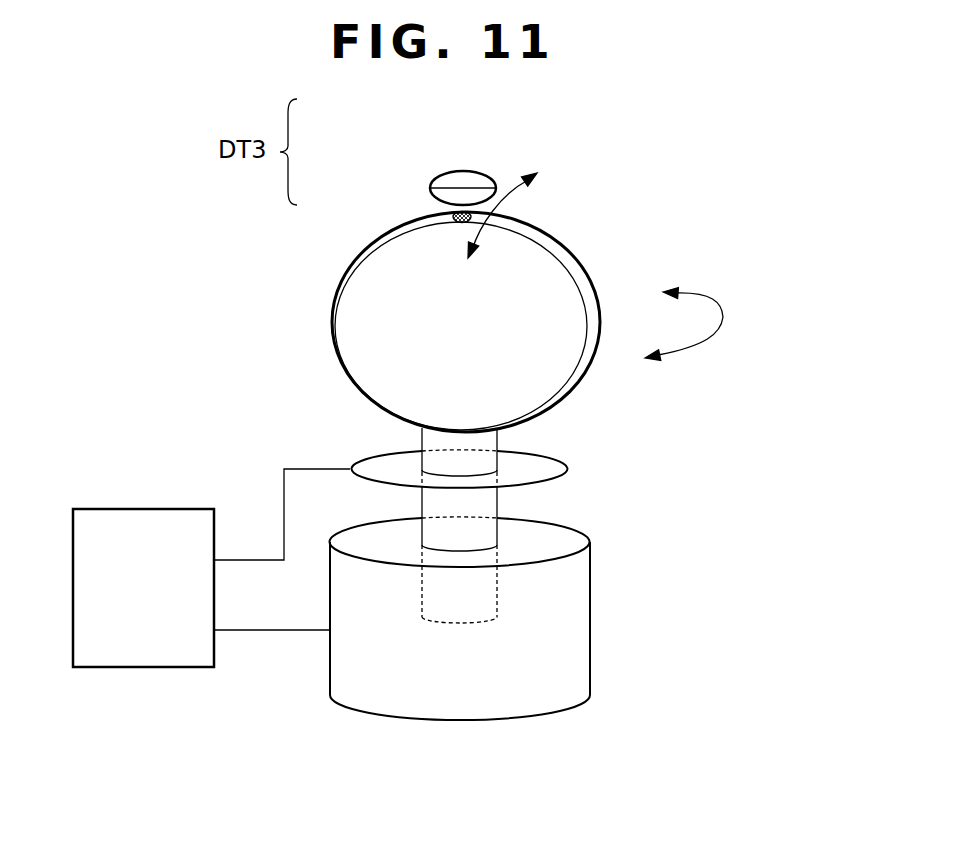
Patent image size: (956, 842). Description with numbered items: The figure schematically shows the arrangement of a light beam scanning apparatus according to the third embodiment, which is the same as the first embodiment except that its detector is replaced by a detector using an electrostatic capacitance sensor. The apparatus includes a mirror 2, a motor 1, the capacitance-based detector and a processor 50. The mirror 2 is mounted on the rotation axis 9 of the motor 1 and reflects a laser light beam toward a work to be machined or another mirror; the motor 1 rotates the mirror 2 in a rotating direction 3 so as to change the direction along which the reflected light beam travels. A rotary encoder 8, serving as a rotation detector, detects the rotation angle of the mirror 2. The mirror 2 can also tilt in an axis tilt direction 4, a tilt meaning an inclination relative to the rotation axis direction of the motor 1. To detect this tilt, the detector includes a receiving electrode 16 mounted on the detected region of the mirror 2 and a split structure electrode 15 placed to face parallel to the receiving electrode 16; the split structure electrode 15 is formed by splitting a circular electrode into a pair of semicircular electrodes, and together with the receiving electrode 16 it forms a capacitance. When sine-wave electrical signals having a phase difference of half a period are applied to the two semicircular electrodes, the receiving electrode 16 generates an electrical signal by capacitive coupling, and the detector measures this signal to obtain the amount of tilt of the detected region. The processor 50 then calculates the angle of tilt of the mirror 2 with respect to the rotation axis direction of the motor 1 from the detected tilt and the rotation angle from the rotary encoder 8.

The motor 1 is at (565, 613).
The mirror 2 is at (356, 336).
The rotating direction 3 is at (723, 317).
The axis tilt direction 4 is at (505, 196).
The rotary encoder 8 is at (530, 465).
The rotation axis 9 is at (483, 507).
The split structure electrode 15 is at (433, 180).
The receiving electrode 16 is at (452, 216).
The processor 50 is at (135, 509).